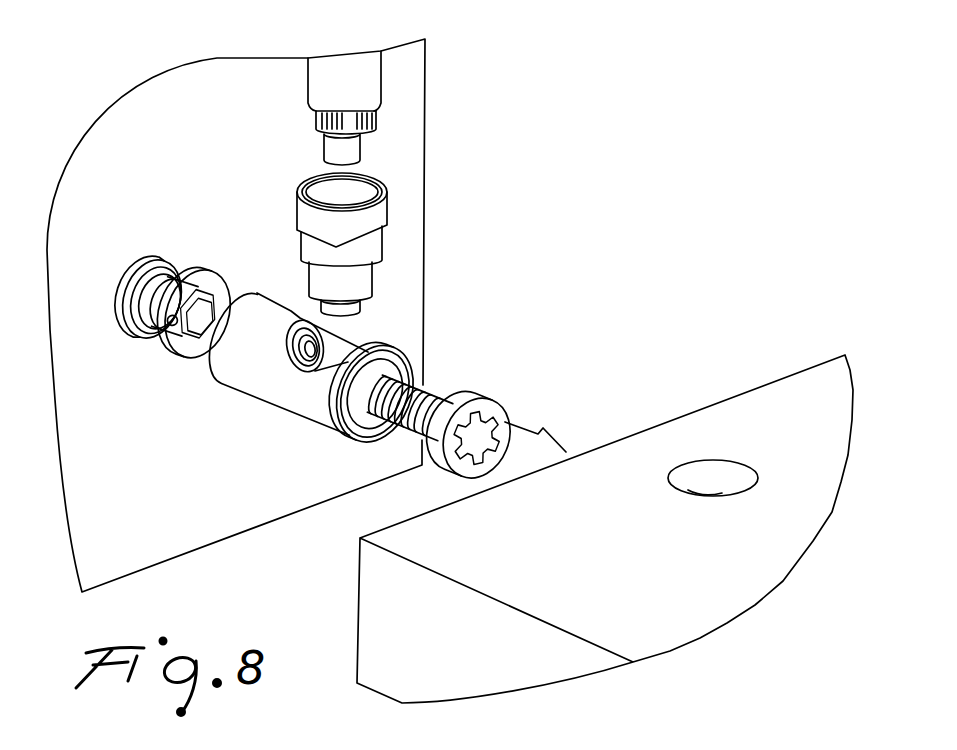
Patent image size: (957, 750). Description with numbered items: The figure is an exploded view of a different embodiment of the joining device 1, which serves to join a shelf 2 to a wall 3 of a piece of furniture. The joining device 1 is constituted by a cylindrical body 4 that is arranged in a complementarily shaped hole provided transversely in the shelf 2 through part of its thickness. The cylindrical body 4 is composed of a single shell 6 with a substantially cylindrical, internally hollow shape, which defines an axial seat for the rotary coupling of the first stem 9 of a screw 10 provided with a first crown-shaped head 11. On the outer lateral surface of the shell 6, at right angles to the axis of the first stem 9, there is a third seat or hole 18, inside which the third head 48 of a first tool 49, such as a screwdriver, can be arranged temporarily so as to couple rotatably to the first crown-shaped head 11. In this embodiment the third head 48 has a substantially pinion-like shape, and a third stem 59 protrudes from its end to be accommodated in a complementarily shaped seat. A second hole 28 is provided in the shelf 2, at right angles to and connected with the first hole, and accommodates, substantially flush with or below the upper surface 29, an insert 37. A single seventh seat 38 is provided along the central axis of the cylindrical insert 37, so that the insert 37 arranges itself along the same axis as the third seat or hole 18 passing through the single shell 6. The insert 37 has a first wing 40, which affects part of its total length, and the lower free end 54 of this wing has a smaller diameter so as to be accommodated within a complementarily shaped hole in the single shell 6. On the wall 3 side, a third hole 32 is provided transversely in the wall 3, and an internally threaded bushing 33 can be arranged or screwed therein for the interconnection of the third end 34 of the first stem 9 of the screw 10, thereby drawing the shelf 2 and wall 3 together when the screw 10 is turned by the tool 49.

The joining device 1 is at (546, 229).
The shelf 2 is at (690, 608).
The wall 3 is at (110, 130).
The cylindrical body 4 is at (257, 290).
The single shell 6 is at (387, 405).
The first stem 9 is at (413, 427).
The screw 10 is at (497, 397).
The first crown-shaped head 11 is at (481, 433).
The third seat or hole 18 is at (357, 334).
The second hole 28 is at (712, 468).
The upper surface 29 is at (778, 400).
The third hole 32 is at (170, 294).
The internally threaded bushing 33 is at (180, 348).
The third end 34 is at (402, 388).
The insert 37 is at (412, 226).
The seventh seat 38 is at (346, 198).
The first wing 40 is at (365, 248).
The third head 48 is at (382, 117).
The first tool 49 is at (381, 77).
The lower free end 54 is at (362, 308).
The third stem 59 is at (332, 148).